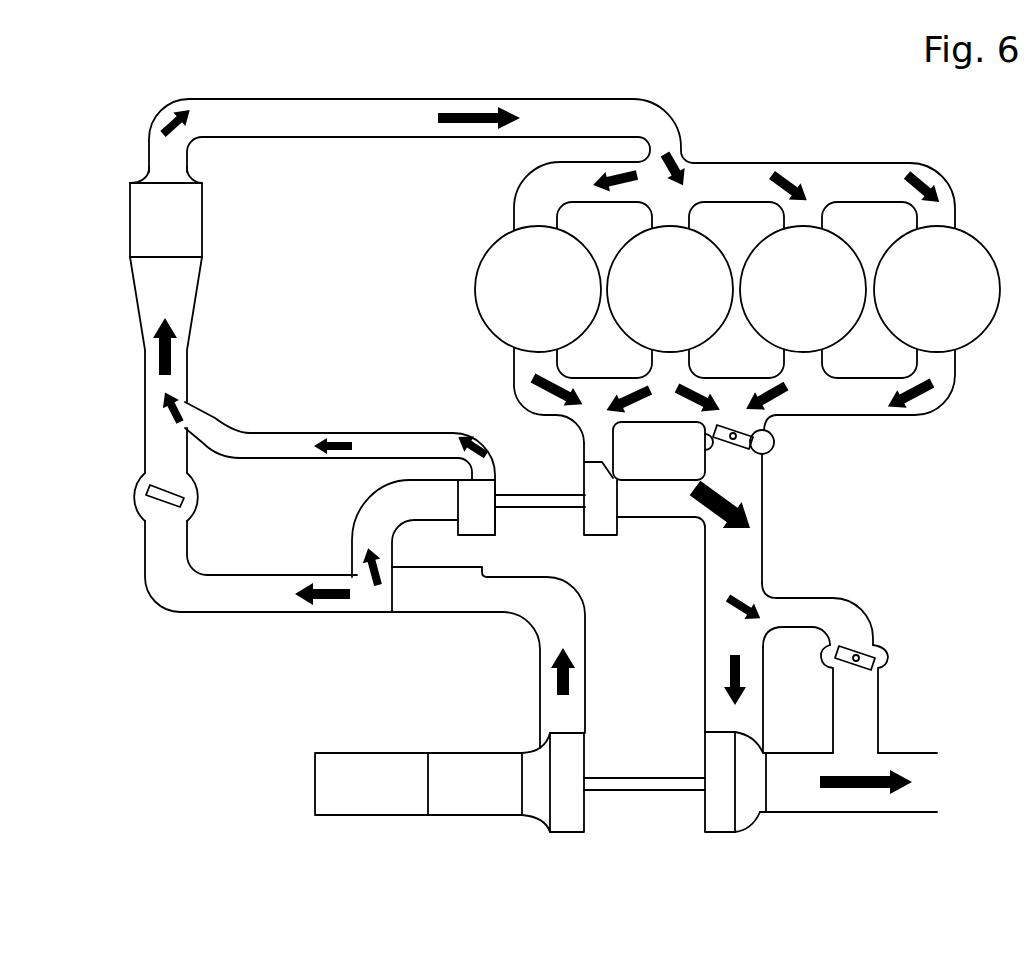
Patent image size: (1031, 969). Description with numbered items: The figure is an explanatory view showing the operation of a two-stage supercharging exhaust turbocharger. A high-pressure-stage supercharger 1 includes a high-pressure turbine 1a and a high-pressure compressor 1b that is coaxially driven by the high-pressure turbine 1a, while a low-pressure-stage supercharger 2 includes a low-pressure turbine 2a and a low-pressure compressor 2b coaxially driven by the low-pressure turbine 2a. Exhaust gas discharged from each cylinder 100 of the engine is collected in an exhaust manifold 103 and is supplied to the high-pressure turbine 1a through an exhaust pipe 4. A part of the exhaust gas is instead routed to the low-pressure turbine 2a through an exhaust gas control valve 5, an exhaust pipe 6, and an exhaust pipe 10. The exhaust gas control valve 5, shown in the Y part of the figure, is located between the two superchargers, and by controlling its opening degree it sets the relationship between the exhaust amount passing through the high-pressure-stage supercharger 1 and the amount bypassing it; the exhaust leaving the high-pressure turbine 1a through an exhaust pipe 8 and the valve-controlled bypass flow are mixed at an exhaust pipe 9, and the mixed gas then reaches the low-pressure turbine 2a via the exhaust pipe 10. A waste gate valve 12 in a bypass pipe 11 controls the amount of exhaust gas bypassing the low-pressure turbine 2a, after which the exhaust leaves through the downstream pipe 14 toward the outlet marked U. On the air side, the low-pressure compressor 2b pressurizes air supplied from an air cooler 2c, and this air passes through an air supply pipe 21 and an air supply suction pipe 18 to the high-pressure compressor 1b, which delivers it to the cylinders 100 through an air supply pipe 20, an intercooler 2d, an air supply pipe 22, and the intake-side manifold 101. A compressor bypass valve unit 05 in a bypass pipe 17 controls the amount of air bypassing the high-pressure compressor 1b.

The high-pressure-stage supercharger 1 is at (533, 520).
The high-pressure turbine 1a is at (600, 518).
The high-pressure compressor 1b is at (470, 485).
The low-pressure-stage supercharger 2 is at (651, 805).
The low-pressure turbine 2a is at (750, 807).
The low-pressure compressor 2b is at (557, 815).
The air cooler 2c is at (400, 800).
The intercooler 2d is at (132, 236).
The exhaust pipe 4 is at (595, 445).
The exhaust gas control valve 5 is at (767, 455).
The exhaust pipe 6 is at (733, 472).
The exhaust pipe 8 is at (669, 507).
The exhaust pipe 9 is at (750, 551).
The exhaust pipe 10 is at (718, 706).
The bypass pipe 11 is at (840, 613).
The waste gate valve 12 is at (862, 650).
The exhaust pipe 14 is at (871, 803).
The bypass pipe 17 is at (258, 596).
The air supply suction pipe 18 is at (368, 518).
The air supply pipe 20 is at (256, 445).
The air supply pipe 21 is at (548, 628).
The air supply pipe 22 is at (373, 115).
The cylinder 100 is at (478, 262).
The exhaust manifold 101 is at (757, 180).
The exhaust manifold 103 is at (858, 408).
The compressor bypass valve unit 05 is at (152, 497).
The Y part Y is at (778, 435).
The direction U is at (908, 660).